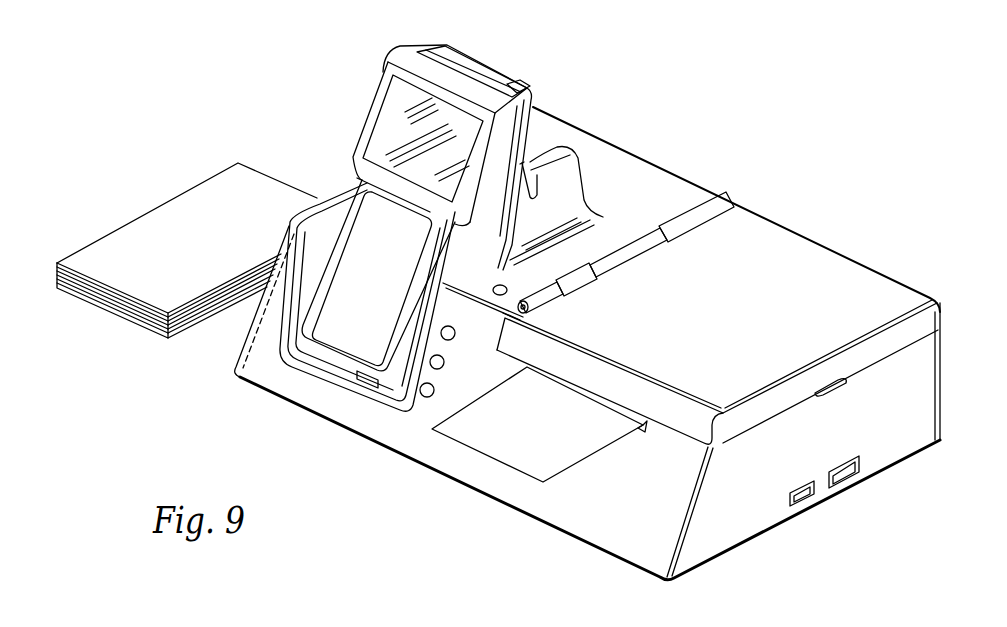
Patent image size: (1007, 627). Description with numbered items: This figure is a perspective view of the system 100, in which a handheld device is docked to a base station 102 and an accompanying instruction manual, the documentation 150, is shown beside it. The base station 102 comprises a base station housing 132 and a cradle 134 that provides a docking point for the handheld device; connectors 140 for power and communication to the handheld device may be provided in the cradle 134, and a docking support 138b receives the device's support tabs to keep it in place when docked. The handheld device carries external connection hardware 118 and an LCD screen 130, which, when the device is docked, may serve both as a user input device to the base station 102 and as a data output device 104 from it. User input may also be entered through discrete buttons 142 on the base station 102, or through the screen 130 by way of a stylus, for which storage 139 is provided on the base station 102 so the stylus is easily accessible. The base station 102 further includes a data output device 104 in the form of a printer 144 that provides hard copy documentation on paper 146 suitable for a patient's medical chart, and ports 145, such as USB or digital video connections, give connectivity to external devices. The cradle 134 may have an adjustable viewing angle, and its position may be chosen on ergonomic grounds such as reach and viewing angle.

The system 100 is at (762, 160).
The base station 102 is at (648, 183).
The data output device 104 is at (777, 265).
The external connection hardware 118 is at (485, 66).
The LCD screen 130 is at (397, 97).
The base station housing 132 is at (603, 515).
The cradle 134 is at (340, 240).
The docking support 138b is at (537, 160).
The stylus storage 139 is at (507, 288).
The connectors 140 is at (367, 383).
The buttons 142 is at (441, 335).
The printer 144 is at (835, 293).
The ports 145 is at (857, 488).
The paper 146 is at (525, 443).
The accompanying documentation 150 is at (152, 245).